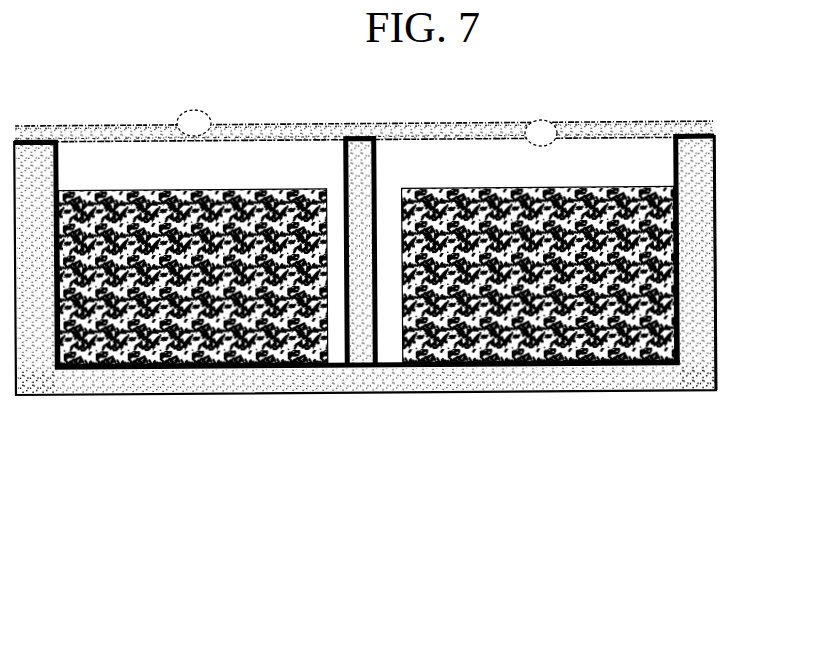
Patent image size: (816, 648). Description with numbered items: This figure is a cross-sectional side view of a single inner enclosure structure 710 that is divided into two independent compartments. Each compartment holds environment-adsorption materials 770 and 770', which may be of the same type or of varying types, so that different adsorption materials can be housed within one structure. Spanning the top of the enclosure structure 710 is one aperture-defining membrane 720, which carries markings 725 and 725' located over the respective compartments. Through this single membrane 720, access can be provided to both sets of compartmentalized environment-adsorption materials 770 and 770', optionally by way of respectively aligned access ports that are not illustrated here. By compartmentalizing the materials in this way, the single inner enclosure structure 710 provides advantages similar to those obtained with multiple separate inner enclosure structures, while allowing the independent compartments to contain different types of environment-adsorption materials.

The single inner enclosure structure 710 is at (488, 368).
The aperture-defining membrane 720 is at (147, 137).
The marking 725 is at (577, 103).
The marking 725' is at (234, 100).
The environment-adsorption materials 770 is at (600, 274).
The environment-adsorption materials 770' is at (193, 343).